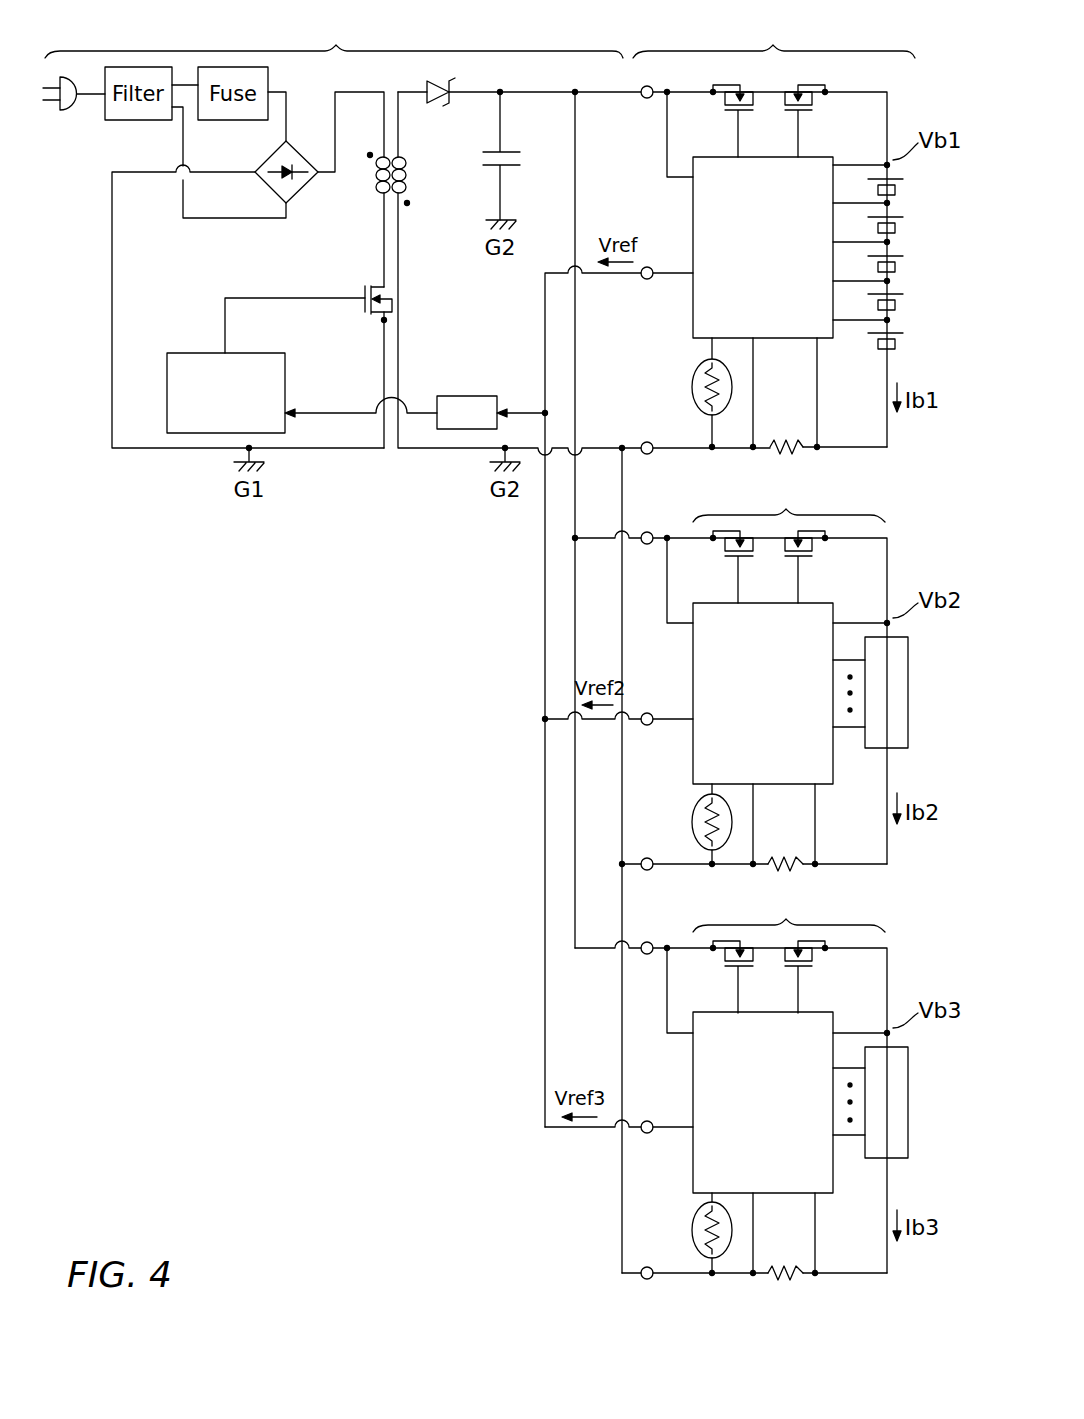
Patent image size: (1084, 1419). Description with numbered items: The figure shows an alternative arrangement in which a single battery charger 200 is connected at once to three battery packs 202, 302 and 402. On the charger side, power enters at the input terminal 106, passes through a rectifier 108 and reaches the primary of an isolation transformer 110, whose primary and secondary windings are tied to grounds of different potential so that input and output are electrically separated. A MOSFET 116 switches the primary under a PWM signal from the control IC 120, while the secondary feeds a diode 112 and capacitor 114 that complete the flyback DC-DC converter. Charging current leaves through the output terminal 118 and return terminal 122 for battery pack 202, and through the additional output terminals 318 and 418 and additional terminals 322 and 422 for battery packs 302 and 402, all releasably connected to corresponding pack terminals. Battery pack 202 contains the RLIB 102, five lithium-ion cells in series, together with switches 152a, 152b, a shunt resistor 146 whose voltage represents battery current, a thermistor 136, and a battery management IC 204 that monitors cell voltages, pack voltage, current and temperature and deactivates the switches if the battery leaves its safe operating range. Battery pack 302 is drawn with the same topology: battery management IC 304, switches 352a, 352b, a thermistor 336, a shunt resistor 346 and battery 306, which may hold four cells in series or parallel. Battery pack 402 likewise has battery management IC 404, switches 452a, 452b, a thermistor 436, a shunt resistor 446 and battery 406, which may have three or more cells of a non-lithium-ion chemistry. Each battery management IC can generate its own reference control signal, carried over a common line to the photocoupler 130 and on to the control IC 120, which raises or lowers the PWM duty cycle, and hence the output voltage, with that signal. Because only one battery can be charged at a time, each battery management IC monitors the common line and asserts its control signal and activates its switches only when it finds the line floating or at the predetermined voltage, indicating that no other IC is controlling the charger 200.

The battery charger 200 is at (334, 37).
The battery pack 202 is at (774, 37).
The RLIB 102 is at (908, 172).
The input terminal 106 is at (75, 112).
The rectifier 108 is at (262, 158).
The isolation transformer 110 is at (372, 196).
The diode 112 is at (443, 100).
The capacitor 114 is at (494, 162).
The MOSFET 116 is at (373, 318).
The output terminal 118 is at (644, 100).
The control IC 120 is at (192, 352).
The return terminal 122 is at (652, 455).
The photocoupler 130 is at (462, 396).
The thermistor 136 is at (692, 376).
The shunt resistor 146 is at (787, 450).
The switch 152a is at (724, 122).
The switch 152b is at (812, 113).
The battery management IC 204 is at (763, 247).
The battery pack 302 is at (789, 501).
The battery management IC 304 is at (763, 693).
The battery 306 is at (908, 700).
The output terminal 318 is at (655, 532).
The terminal 322 is at (655, 869).
The thermistor 336 is at (692, 811).
The current sense resistor 346 is at (788, 859).
The switch 352a is at (724, 566).
The switch 352b is at (812, 559).
The battery pack 402 is at (789, 911).
The battery management IC 404 is at (763, 1102).
The battery 406 is at (908, 1110).
The output terminal 418 is at (653, 943).
The terminal 422 is at (651, 1267).
The thermistor 436 is at (692, 1219).
The current sense resistor 446 is at (788, 1268).
The switch 452a is at (724, 976).
The switch 452b is at (812, 969).